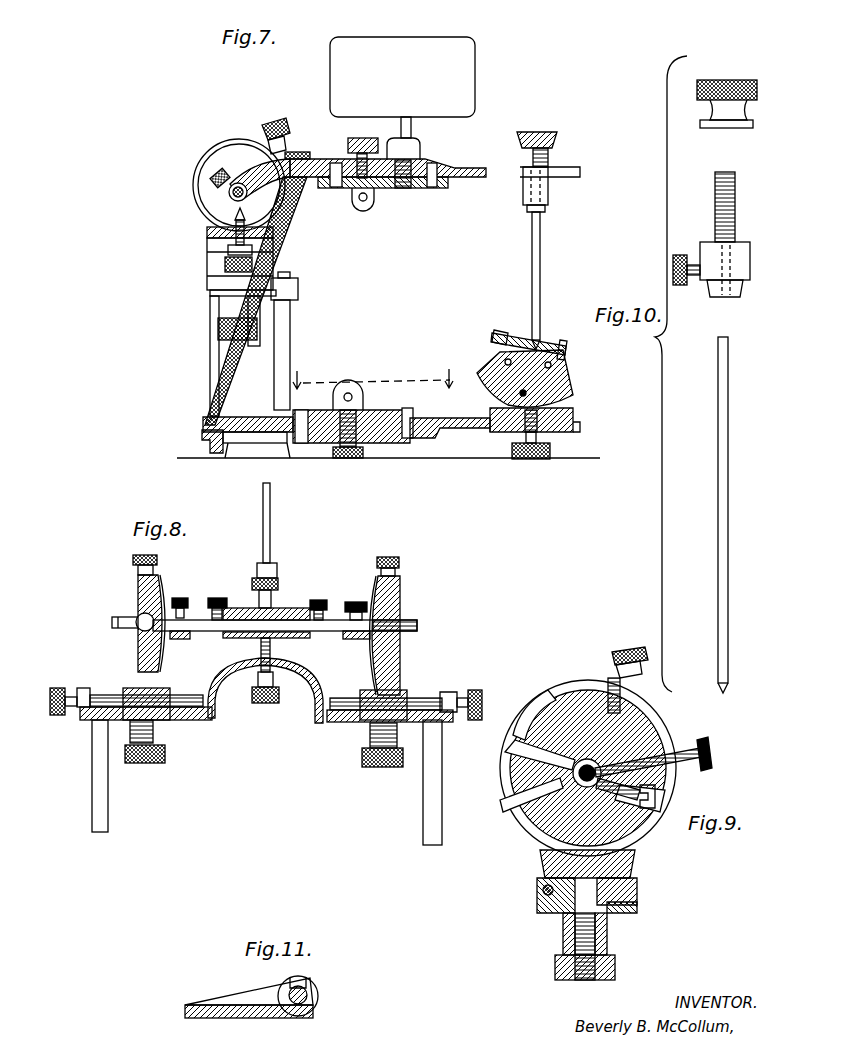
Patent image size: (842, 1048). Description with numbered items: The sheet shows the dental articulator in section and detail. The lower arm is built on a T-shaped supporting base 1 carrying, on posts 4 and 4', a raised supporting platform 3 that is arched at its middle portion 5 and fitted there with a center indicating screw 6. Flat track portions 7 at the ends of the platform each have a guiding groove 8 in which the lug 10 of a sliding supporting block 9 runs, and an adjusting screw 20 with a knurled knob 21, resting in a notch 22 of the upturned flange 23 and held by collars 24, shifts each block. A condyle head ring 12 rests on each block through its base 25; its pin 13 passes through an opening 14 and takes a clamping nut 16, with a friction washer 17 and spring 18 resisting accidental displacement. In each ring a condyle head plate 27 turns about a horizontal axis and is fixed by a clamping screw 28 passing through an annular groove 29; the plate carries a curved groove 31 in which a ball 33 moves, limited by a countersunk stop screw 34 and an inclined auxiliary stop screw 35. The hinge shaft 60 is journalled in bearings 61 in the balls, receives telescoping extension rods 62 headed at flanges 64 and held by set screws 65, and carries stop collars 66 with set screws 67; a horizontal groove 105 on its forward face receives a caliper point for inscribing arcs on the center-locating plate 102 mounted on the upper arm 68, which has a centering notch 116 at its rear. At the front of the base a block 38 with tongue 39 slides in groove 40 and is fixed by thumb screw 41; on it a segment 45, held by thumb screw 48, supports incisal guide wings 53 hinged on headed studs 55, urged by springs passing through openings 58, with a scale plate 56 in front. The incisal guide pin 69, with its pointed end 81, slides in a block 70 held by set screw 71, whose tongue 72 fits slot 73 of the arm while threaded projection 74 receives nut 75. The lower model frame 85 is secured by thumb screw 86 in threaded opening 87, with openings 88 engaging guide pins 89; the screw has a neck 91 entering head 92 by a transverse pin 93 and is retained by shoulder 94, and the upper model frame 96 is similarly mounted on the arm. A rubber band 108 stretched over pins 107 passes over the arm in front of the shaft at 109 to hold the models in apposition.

In FIG. 7, the supporting base 1 is at (239, 428).
In FIG. 7, the supporting platform 3 is at (298, 289).
In FIG. 8, the supporting platform 3 is at (330, 722).
In FIG. 11, the supporting platform 3 is at (285, 1018).
In FIG. 7, the post 4 is at (297, 355).
In FIG. 8, the post 4 is at (267, 782).
In FIG. 7, the post 4' is at (207, 356).
In FIG. 7, the upwardly bowed portion 5 is at (208, 243).
In FIG. 8, the upwardly bowed portion 5 is at (303, 676).
In FIG. 7, the center indicating screw 6 is at (226, 224).
In FIG. 8, the center indicating screw 6 is at (280, 690).
In FIG. 8, the track portion 7 is at (408, 722).
In FIG. 9, the track portion 7 is at (545, 905).
In FIG. 9, the guiding groove 8 is at (553, 913).
In FIG. 8, the supporting block 9 is at (408, 692).
In FIG. 9, the supporting block 9 is at (537, 893).
In FIG. 9, the lug 10 is at (640, 910).
In FIG. 7, the condyle head ring 12 is at (194, 188).
In FIG. 8, the condyle head ring 12 is at (400, 665).
In FIG. 9, the condyle head ring 12 is at (512, 815).
In FIG. 8, the pin 13 is at (375, 722).
In FIG. 9, the pin 13 is at (637, 893).
In FIG. 9, the opening 14 is at (633, 876).
In FIG. 9, the clamping nut 16 is at (555, 972).
In FIG. 9, the friction washer 17 is at (558, 918).
In FIG. 9, the spring 18 is at (607, 940).
In FIG. 7, the adjusting screw 20 is at (374, 379).
In FIG. 8, the adjusting screw 20 is at (440, 698).
In FIG. 11, the adjusting screw 20 is at (305, 988).
In FIG. 8, the knurled knob 21 is at (480, 690).
In FIG. 11, the knurled knob 21 is at (298, 980).
In FIG. 8, the notch 22 is at (80, 695).
In FIG. 11, the notch 22 is at (316, 988).
In FIG. 8, the upturned flange 23 is at (455, 692).
In FIG. 11, the upturned flange 23 is at (242, 1000).
In FIG. 8, the collar 24 is at (86, 697).
In FIG. 9, the base of condyle head ring 25 is at (545, 864).
In FIG. 7, the condyle head plate 27 is at (238, 146).
In FIG. 8, the condyle head plate 27 is at (395, 590).
In FIG. 9, the condyle head plate 27 is at (640, 735).
In FIG. 7, the clamping screw 28 is at (262, 126).
In FIG. 8, the clamping screw 28 is at (158, 567).
In FIG. 9, the clamping screw 28 is at (612, 672).
In FIG. 8, the annular groove 29 is at (398, 570).
In FIG. 9, the annular groove 29 is at (577, 690).
In FIG. 7, the groove 31 is at (218, 162).
In FIG. 8, the groove 31 is at (396, 612).
In FIG. 9, the groove 31 is at (540, 712).
In FIG. 8, the ball 33 is at (402, 623).
In FIG. 9, the ball 33 is at (560, 772).
In FIG. 9, the stop screw 34 is at (655, 795).
In FIG. 9, the auxiliary stop screw 35 is at (712, 745).
In FIG. 7, the block 38 is at (571, 410).
In FIG. 7, the tongue portion 39 is at (572, 434).
In FIG. 7, the groove 40 is at (490, 434).
In FIG. 7, the thumb screw 41 is at (542, 460).
In FIG. 7, the segment 45 is at (574, 378).
In FIG. 7, the thumb screw 48 is at (520, 391).
In FIG. 7, the incisal guide wing 53 is at (541, 343).
In FIG. 7, the headed stud 55 is at (500, 334).
In FIG. 7, the scale plate 56 is at (560, 352).
In FIG. 7, the opening 58 is at (565, 362).
In FIG. 7, the hinge axis shaft 60 is at (229, 196).
In FIG. 8, the hinge axis shaft 60 is at (337, 618).
In FIG. 9, the hinge axis shaft 60 is at (550, 790).
In FIG. 8, the bearing 61 is at (395, 636).
In FIG. 9, the bearing 61 is at (575, 765).
In FIG. 8, the extension rod 62 is at (337, 640).
In FIG. 9, the extension rod 62 is at (665, 830).
In FIG. 8, the flange 64 is at (418, 626).
In FIG. 8, the set screw 65 is at (318, 600).
In FIG. 8, the stop collar 66 is at (181, 639).
In FIG. 8, the set screw 67 is at (180, 598).
In FIG. 7, the upper arm 68 is at (325, 159).
In FIG. 8, the upper arm 68 is at (297, 607).
In FIG. 7, the incisal guide pin 69 is at (541, 236).
In FIG. 10, the incisal guide pin 69 is at (729, 440).
In FIG. 10, the block 70 is at (751, 261).
In FIG. 7, the set screw 71 is at (548, 190).
In FIG. 10, the set screw 71 is at (695, 282).
In FIG. 7, the tongue portion 72 is at (523, 174).
In FIG. 10, the tongue portion 72 is at (736, 233).
In FIG. 7, the slot 73 is at (570, 168).
In FIG. 7, the threaded projection 74 is at (520, 142).
In FIG. 10, the threaded projection 74 is at (736, 190).
In FIG. 7, the nut 75 is at (558, 135).
In FIG. 10, the nut 75 is at (758, 92).
In FIG. 10, the pointed end 81 is at (725, 692).
In FIG. 7, the lower model frame 85 is at (378, 410).
In FIG. 7, the thumb screw 86 is at (362, 437).
In FIG. 7, the threaded opening 87 is at (360, 407).
In FIG. 7, the opening 88 is at (413, 413).
In FIG. 7, the guide pin 89 is at (305, 408).
In FIG. 7, the neck portion 91 is at (335, 444).
In FIG. 7, the head 92 is at (347, 459).
In FIG. 7, the transverse pin 93 is at (358, 447).
In FIG. 7, the shoulder 94 is at (356, 440).
In FIG. 7, the upper model frame 96 is at (405, 188).
In FIG. 7, the center-locating plate 102 is at (402, 87).
In FIG. 8, the center-locating plate 102 is at (263, 498).
In FIG. 7, the horizontal groove 105 is at (257, 193).
In FIG. 9, the horizontal groove 105 is at (640, 738).
In FIG. 7, the pin 107 is at (205, 438).
In FIG. 7, the rubber band 108 is at (223, 367).
In FIG. 7, the rubber band portion in front of shaft 109 is at (295, 152).
In FIG. 8, the centering notch 116 is at (262, 640).